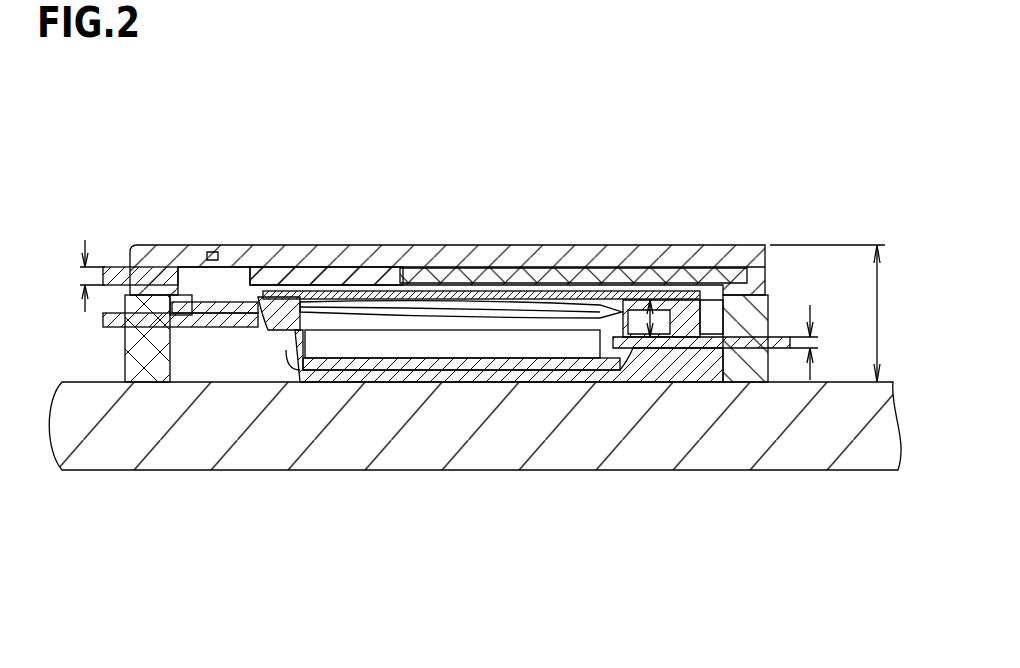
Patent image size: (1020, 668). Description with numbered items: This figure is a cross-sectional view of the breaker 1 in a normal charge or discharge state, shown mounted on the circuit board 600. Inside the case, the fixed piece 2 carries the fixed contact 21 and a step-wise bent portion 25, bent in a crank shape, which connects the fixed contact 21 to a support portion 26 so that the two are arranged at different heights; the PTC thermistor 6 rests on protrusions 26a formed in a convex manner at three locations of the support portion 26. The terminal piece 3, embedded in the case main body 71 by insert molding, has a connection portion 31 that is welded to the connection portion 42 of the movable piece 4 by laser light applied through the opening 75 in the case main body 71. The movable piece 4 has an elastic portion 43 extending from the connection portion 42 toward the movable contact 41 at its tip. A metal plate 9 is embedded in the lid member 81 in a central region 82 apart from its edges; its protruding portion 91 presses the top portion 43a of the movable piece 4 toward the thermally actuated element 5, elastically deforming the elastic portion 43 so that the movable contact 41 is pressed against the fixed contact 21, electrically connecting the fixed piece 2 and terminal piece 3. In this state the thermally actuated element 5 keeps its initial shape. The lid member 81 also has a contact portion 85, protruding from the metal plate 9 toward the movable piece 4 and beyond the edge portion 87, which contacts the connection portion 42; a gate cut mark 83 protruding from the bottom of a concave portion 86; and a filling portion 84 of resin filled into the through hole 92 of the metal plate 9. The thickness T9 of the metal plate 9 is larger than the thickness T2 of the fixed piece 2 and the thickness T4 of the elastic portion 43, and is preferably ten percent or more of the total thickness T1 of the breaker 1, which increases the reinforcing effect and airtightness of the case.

The breaker 1 is at (749, 177).
The fixed piece 2 is at (606, 374).
The fixed contact 21 is at (681, 300).
The step-wise bent portion 25 is at (648, 318).
The support portion 26 is at (502, 374).
The protrusions (dowels) 26a is at (352, 372).
The terminal piece 3 is at (160, 342).
The connection portion 31 is at (185, 332).
The movable piece 4 is at (567, 300).
The movable contact 41 is at (712, 340).
The connection portion 42 is at (199, 262).
The elastic portion 43 is at (512, 306).
The top portion 43a is at (300, 335).
The thermally actuated element 5 is at (518, 348).
The PTC thermistor 6 is at (453, 340).
The case main body 71 is at (268, 318).
The opening 75 is at (152, 342).
The lid member 81 is at (290, 258).
The central region 82 is at (483, 262).
The gate cut mark 83 is at (214, 262).
The filling portion 84 is at (250, 268).
The contact portion 85 is at (236, 322).
The concave portion 86 is at (140, 245).
The edge portion 87 is at (165, 318).
The metal plate 9 is at (439, 262).
The protruding portion 91 is at (372, 290).
The through hole 92 is at (163, 265).
The circuit board 600 is at (818, 437).
The total thickness T1 is at (846, 313).
The thickness of the fixed piece T2 is at (827, 342).
The thickness of the elastic portion T4 is at (650, 298).
The thickness of the metal plate T9 is at (70, 276).